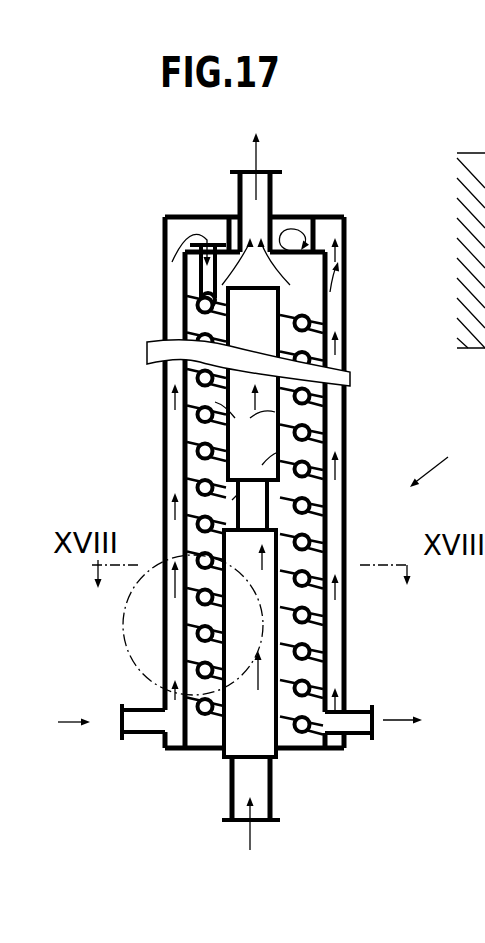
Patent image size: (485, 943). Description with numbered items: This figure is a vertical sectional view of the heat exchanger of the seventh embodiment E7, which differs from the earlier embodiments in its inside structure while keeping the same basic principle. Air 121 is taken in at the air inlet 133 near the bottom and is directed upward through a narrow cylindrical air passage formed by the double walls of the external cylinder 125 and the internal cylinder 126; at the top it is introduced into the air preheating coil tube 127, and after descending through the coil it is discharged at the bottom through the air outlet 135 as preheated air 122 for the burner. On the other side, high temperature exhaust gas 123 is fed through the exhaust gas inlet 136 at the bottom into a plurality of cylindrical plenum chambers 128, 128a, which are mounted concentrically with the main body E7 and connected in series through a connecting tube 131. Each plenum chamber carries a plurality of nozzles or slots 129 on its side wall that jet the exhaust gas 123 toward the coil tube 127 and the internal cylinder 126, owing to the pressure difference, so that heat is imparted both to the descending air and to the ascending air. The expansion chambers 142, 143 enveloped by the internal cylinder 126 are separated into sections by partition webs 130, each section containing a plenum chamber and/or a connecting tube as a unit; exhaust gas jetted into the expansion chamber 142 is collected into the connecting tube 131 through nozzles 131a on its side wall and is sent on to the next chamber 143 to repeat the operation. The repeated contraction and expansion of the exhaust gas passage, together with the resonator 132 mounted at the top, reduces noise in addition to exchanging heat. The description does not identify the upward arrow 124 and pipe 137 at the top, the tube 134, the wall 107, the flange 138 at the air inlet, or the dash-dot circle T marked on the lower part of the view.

The outlet flow 124 is at (230, 164).
The top outlet pipe 137 is at (240, 185).
The resonator 132 is at (315, 238).
The external cylinder 125 is at (347, 257).
The internal cylinder 126 is at (327, 298).
The inlet tube 134 is at (199, 277).
The air preheating coil tube 127 is at (197, 343).
The inner wall 107 is at (187, 420).
The partition web 130 is at (190, 450).
The nozzle 131a is at (237, 494).
The connecting tube 131 is at (268, 518).
The plenum chamber 128a is at (346, 409).
The plenum chamber 128 is at (327, 592).
The nozzle or slot 129 is at (312, 645).
The expansion chamber 143 is at (313, 449).
The inlet flange 138 is at (123, 708).
The air 121 is at (71, 708).
The air inlet 133 is at (143, 733).
The expansion chamber 142 is at (200, 738).
The exhaust gas inlet 136 is at (270, 792).
The high temperature exhaust gas 123 is at (276, 828).
The air outlet 135 is at (357, 735).
The preheated air 122 is at (408, 739).
The detail circle T is at (193, 625).
The seventh embodiment E7 is at (438, 461).